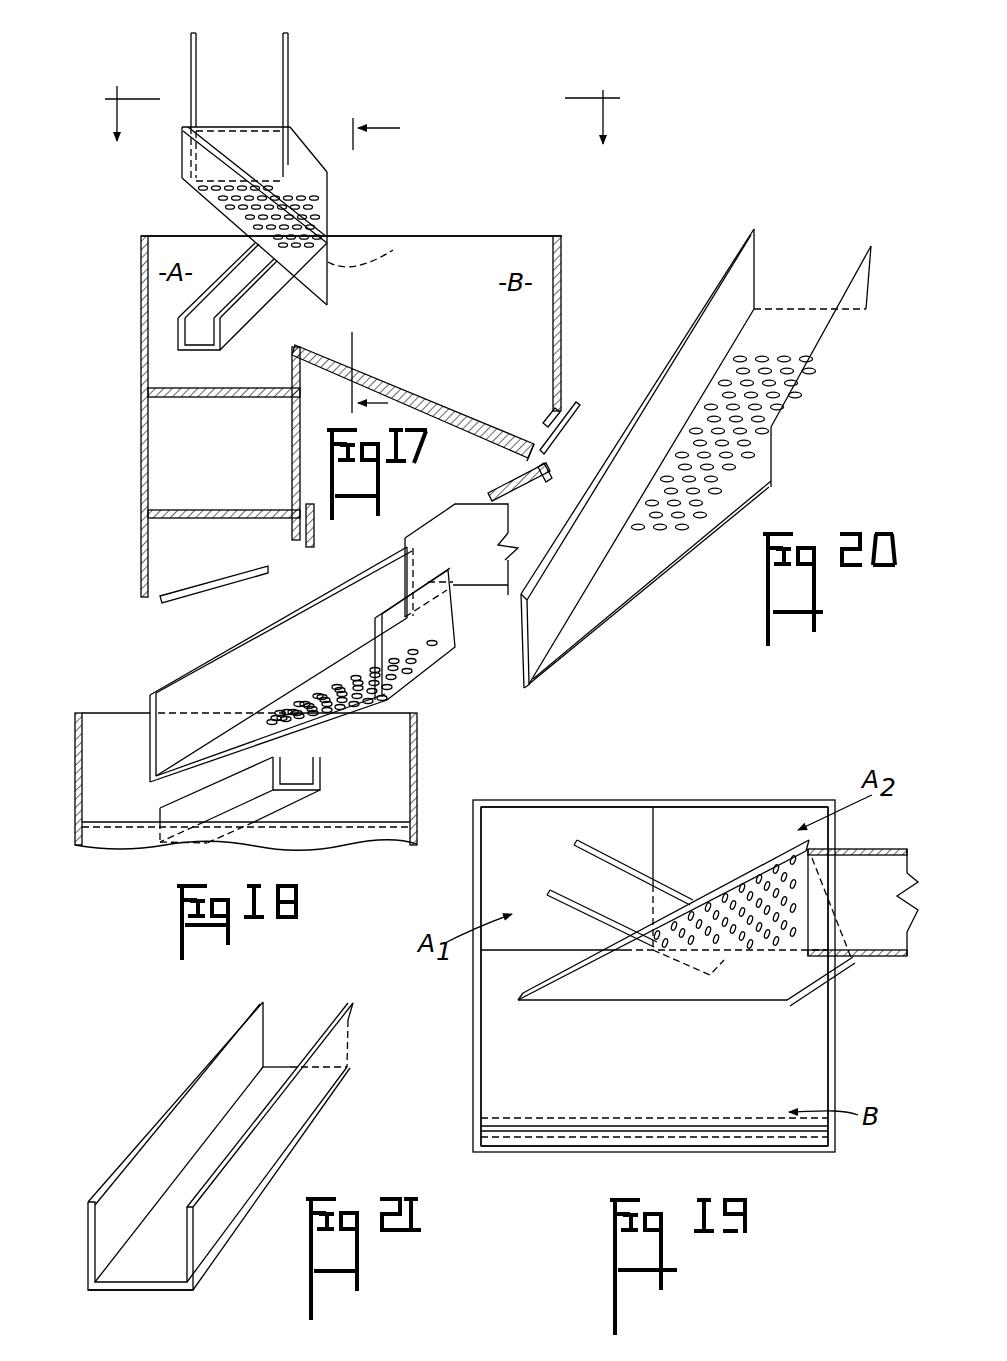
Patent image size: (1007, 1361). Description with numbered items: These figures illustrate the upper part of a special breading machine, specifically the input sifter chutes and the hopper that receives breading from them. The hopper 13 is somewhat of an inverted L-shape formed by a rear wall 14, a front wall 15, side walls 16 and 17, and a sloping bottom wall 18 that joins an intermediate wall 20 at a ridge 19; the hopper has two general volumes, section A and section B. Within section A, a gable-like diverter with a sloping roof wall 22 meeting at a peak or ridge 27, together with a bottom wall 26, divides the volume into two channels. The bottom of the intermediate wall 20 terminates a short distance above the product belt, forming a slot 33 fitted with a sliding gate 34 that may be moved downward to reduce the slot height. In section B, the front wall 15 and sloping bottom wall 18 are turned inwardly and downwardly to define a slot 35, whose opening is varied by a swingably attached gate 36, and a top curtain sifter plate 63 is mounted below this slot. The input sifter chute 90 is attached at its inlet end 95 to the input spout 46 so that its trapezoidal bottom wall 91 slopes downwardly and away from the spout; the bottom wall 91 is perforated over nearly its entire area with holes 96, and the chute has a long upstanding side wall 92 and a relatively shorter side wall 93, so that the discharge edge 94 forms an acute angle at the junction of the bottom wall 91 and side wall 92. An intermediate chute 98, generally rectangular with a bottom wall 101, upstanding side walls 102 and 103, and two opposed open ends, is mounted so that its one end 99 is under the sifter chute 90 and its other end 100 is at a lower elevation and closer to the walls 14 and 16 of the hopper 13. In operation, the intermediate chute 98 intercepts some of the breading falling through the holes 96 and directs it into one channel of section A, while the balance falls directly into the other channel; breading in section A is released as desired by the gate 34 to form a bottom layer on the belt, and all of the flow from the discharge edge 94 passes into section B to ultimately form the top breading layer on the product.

In FIG. 17, the hopper 13 is at (414, 191).
In FIG. 18, the hopper 13 is at (73, 836).
In FIG. 19, the hopper 13 is at (854, 1044).
In FIG. 17, the rear wall 14 is at (141, 300).
In FIG. 18, the rear wall 14 is at (115, 712).
In FIG. 19, the rear wall 14 is at (578, 806).
In FIG. 17, the front wall 15 is at (562, 284).
In FIG. 18, the side wall 16 is at (75, 767).
In FIG. 19, the side wall 16 is at (474, 892).
In FIG. 17, the side wall 17 is at (478, 262).
In FIG. 18, the side wall 17 is at (418, 757).
In FIG. 19, the side wall 17 is at (838, 1012).
In FIG. 17, the sloping bottom wall 18 is at (384, 273).
In FIG. 19, the sloping bottom wall 18 is at (500, 1034).
In FIG. 17, the ridge 19 is at (366, 106).
In FIG. 18, the ridge 19 is at (368, 822).
In FIG. 19, the ridge 19 is at (510, 955).
In FIG. 17, the intermediate wall 20 is at (303, 420).
In FIG. 17, the sloping roof wall 22 is at (170, 423).
In FIG. 17, the bottom wall 26 is at (176, 510).
In FIG. 19, the peak or ridge 27 is at (654, 870).
In FIG. 17, the slot 33 is at (290, 548).
In FIG. 17, the sliding gate 34 is at (314, 542).
In FIG. 17, the slot 35 is at (548, 430).
In FIG. 19, the slot 35 is at (784, 1128).
In FIG. 17, the gate 36 is at (578, 406).
In FIG. 17, the input spout 46 is at (293, 54).
In FIG. 18, the input spout 46 is at (447, 528).
In FIG. 19, the input spout 46 is at (870, 850).
In FIG. 17, the top curtain sifter plate 63 is at (553, 470).
In FIG. 17, the input sifter chute 90 is at (313, 138).
In FIG. 18, the input sifter chute 90 is at (272, 616).
In FIG. 20, the input sifter chute 90 is at (846, 376).
In FIG. 19, the input sifter chute 90 is at (794, 838).
In FIG. 17, the bottom wall 91 is at (320, 208).
In FIG. 20, the bottom wall 91 is at (645, 553).
In FIG. 19, the bottom wall 91 is at (672, 988).
In FIG. 20, the long upstanding side wall 92 is at (579, 503).
In FIG. 20, the shorter side wall 93 is at (808, 406).
In FIG. 20, the discharge edge 94 is at (607, 630).
In FIG. 19, the discharge edge 94 is at (610, 1000).
In FIG. 20, the inlet end 95 is at (797, 278).
In FIG. 20, the holes 96 is at (736, 357).
In FIG. 19, the holes 96 is at (787, 930).
In FIG. 17, the intermediate chute 98 is at (212, 276).
In FIG. 18, the intermediate chute 98 is at (323, 773).
In FIG. 19, the intermediate chute 98 is at (640, 872).
In FIG. 21, the intermediate chute 98 is at (210, 1052).
In FIG. 17, the end 99 is at (376, 256).
In FIG. 19, the end 99 is at (750, 935).
In FIG. 21, the end 99 is at (288, 1067).
In FIG. 17, the end 100 is at (193, 353).
In FIG. 19, the end 100 is at (562, 873).
In FIG. 21, the end 100 is at (160, 1292).
In FIG. 21, the bottom wall 101 is at (245, 1108).
In FIG. 21, the side wall 102 is at (312, 1082).
In FIG. 21, the side wall 103 is at (180, 1105).